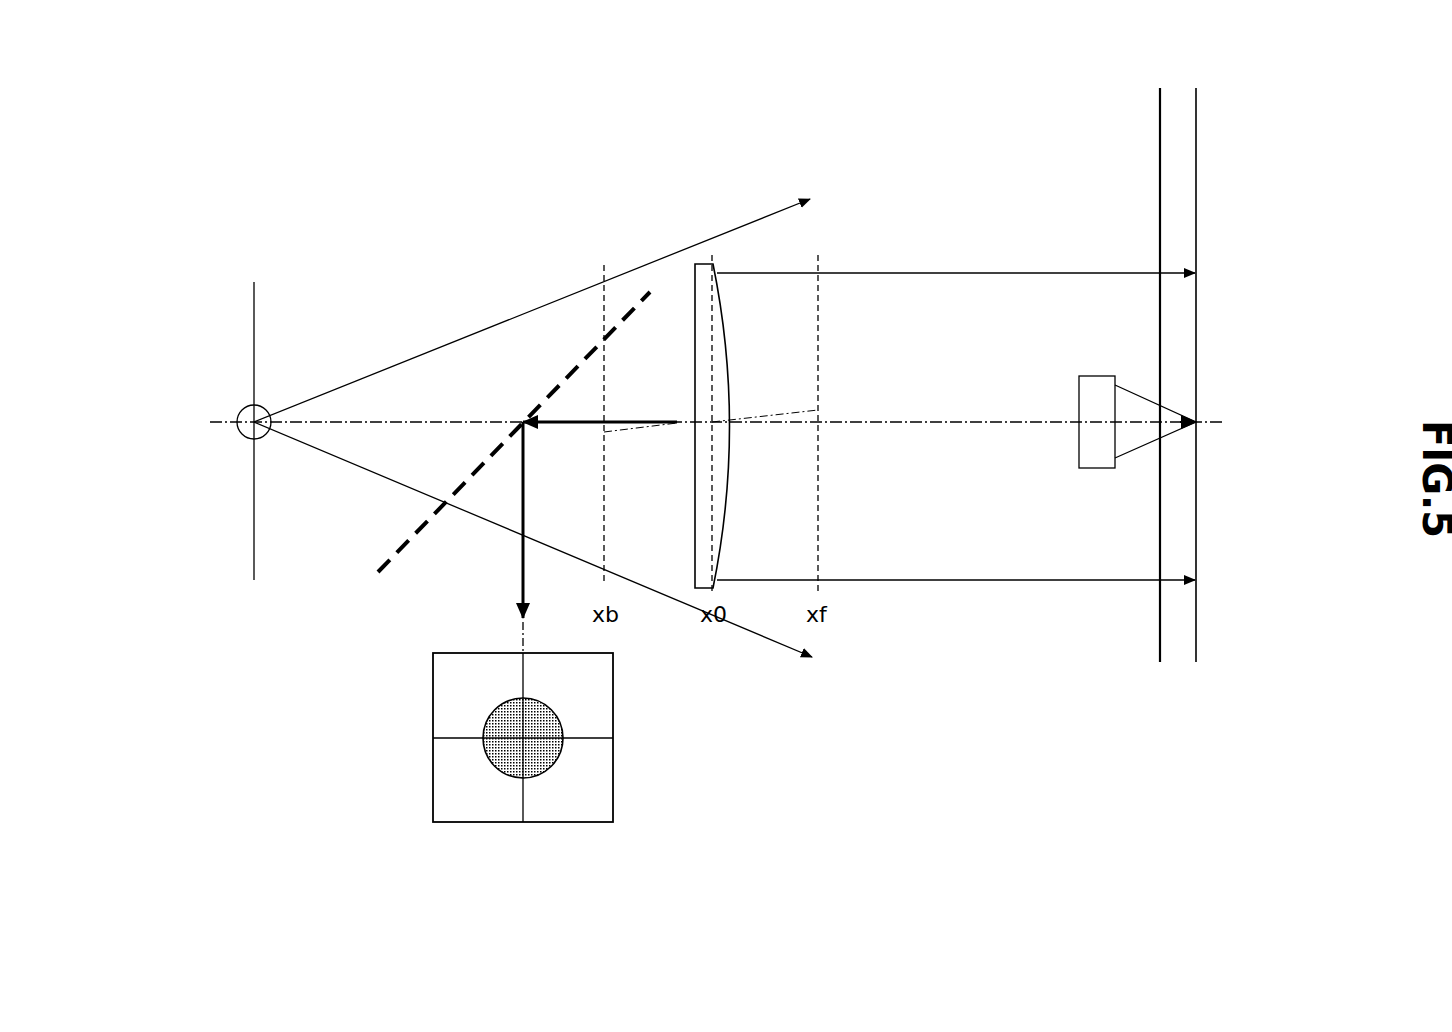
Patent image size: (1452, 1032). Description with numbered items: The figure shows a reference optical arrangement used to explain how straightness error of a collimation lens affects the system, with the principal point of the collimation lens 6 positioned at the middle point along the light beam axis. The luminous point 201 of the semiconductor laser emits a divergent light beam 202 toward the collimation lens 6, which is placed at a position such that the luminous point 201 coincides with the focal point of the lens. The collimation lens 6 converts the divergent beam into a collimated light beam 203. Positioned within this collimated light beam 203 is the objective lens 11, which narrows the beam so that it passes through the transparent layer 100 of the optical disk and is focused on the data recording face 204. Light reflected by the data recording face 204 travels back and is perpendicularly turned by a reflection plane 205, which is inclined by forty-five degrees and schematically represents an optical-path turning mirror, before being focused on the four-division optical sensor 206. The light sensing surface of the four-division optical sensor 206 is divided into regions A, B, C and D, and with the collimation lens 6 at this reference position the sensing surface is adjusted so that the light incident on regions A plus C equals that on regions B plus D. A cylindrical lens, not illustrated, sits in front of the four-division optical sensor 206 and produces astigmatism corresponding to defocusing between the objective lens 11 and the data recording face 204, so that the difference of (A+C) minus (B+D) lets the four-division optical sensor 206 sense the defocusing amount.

The collimation lens 6 is at (700, 264).
The objective lens 11 is at (1100, 380).
The transparent layer 100 is at (1178, 615).
The luminous point 201 is at (243, 436).
The divergent light beam 202 is at (413, 357).
The collimated light beam 203 is at (921, 273).
The data recording face 204 is at (1197, 495).
The reflection plane 205 is at (380, 572).
The four-division optical sensor 206 is at (443, 707).